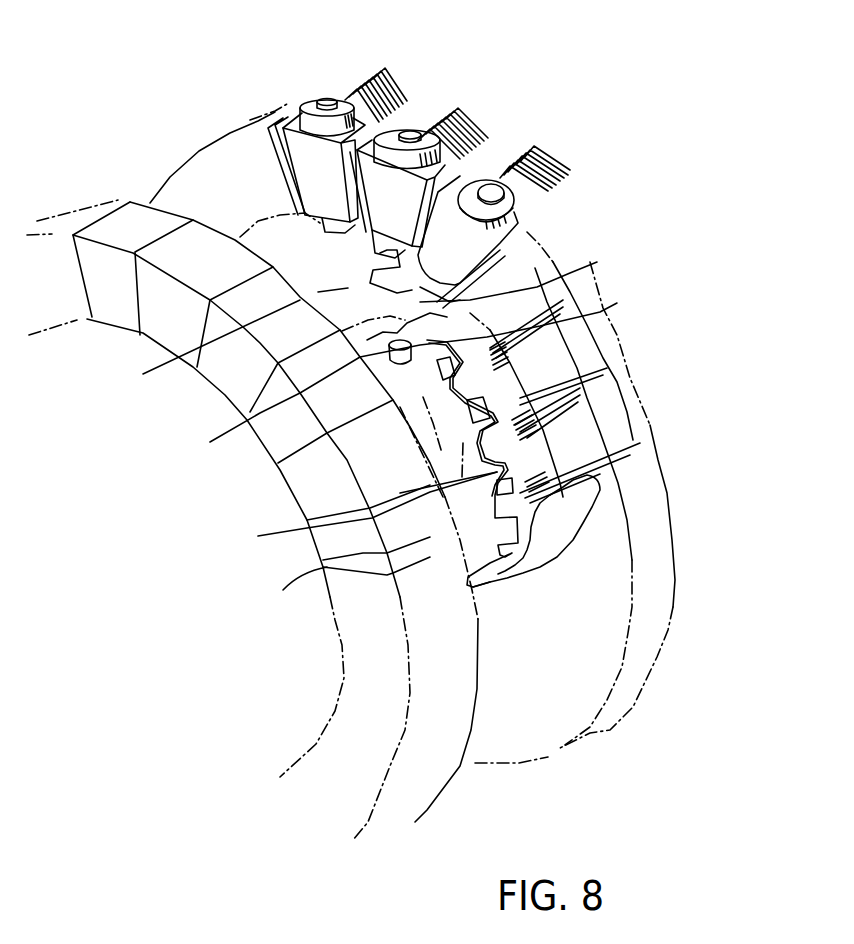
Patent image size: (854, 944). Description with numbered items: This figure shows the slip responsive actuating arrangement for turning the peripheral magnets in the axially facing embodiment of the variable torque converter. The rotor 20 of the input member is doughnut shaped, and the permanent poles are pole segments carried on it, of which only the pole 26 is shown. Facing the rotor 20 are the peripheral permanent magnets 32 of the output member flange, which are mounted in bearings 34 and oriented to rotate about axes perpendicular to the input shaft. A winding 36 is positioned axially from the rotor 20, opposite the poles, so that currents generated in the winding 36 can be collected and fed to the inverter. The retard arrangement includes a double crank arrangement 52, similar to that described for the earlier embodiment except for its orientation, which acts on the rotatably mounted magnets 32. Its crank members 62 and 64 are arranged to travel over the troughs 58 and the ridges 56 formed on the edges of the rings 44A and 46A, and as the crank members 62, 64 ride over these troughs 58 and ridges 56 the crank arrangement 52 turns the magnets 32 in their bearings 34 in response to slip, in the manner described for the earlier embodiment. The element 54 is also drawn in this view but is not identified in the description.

The rotor 20 is at (351, 505).
The pole 26 is at (138, 213).
The peripheral magnets 32 is at (294, 155).
The bearings 34 is at (313, 96).
The winding 36 is at (413, 82).
The ring 44A is at (572, 516).
The ring 46A is at (611, 416).
The double crank arrangement 52 is at (220, 345).
The magnet back plate 54 is at (394, 386).
The ridges 56 is at (284, 587).
The troughs 58 is at (350, 516).
The crank member 62 is at (520, 287).
The crank member 64 is at (570, 318).